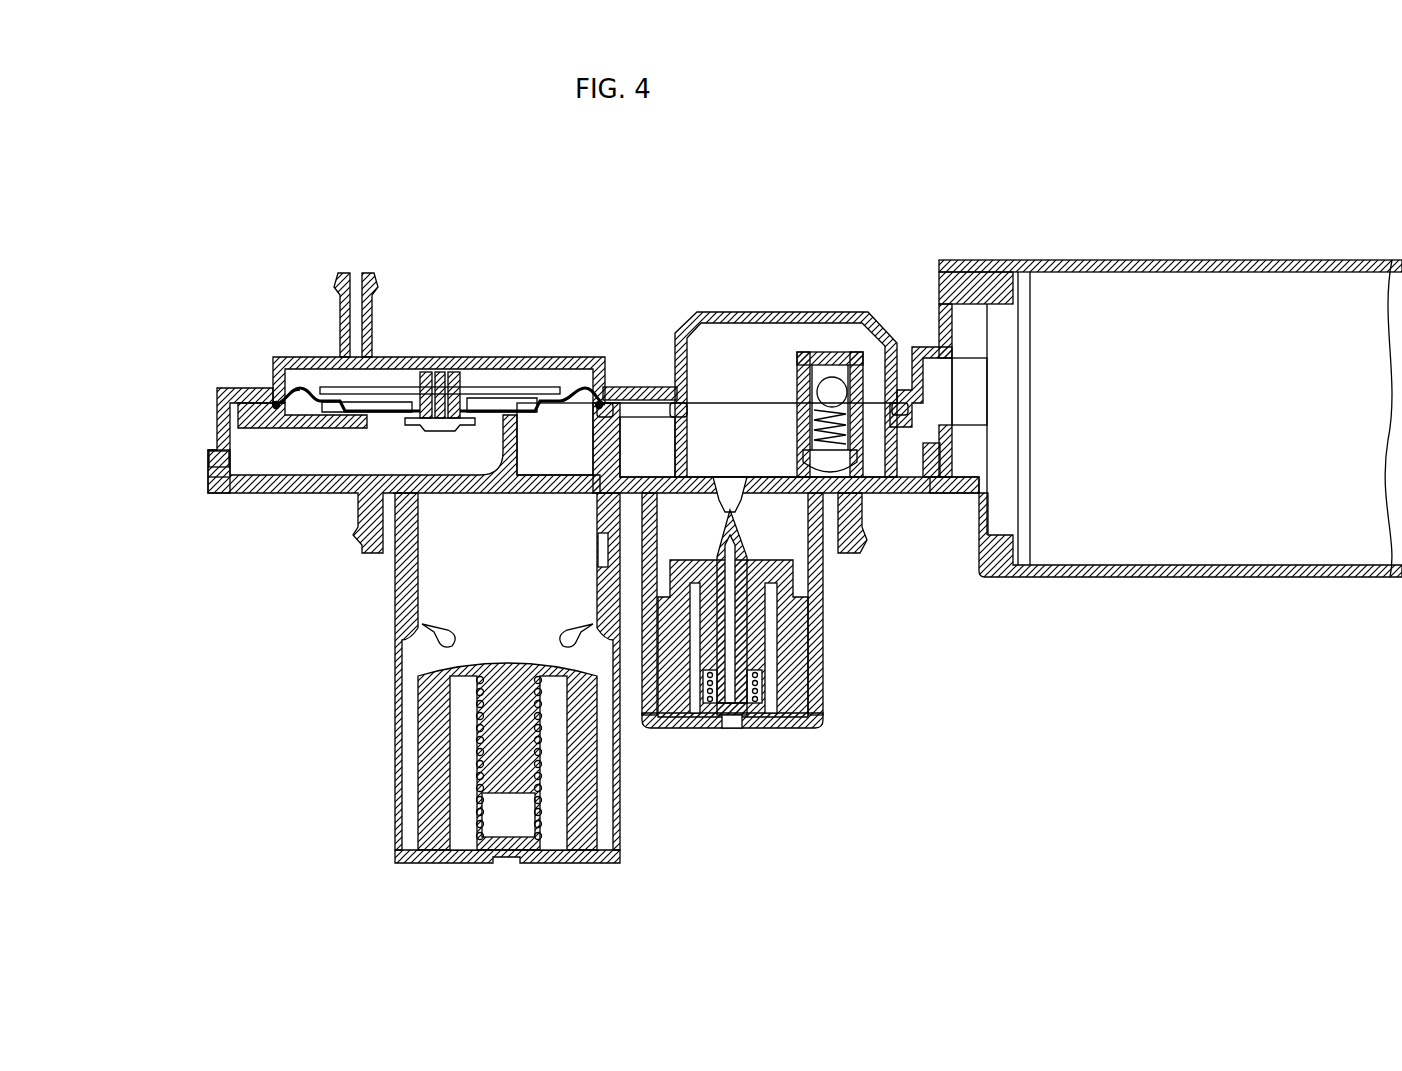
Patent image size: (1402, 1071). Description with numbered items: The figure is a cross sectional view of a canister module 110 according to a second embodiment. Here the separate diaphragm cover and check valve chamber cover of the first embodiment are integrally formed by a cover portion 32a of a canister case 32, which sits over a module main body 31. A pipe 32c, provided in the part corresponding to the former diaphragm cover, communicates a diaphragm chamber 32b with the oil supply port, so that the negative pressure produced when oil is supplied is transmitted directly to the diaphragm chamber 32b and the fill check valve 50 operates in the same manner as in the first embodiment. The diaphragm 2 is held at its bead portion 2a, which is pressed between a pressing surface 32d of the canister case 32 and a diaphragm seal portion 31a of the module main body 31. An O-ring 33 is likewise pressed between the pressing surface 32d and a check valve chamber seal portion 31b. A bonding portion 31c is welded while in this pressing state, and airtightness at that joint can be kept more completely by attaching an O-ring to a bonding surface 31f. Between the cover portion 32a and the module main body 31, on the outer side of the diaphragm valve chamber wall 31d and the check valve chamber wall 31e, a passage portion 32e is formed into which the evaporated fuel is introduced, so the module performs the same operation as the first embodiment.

The diaphragm 2 is at (355, 407).
The bead portion 2a is at (268, 405).
The module main body 31 is at (286, 494).
The diaphragm seal portion 31a is at (283, 408).
The check valve chamber seal portion 31b is at (688, 410).
The bonding portion 31c is at (225, 494).
The diaphragm valve chamber wall 31d is at (623, 387).
The check valve chamber wall 31e is at (605, 480).
The bonding surface 31f is at (212, 478).
The canister case 32 is at (1000, 262).
The cover portion 32a is at (650, 387).
The diaphragm chamber 32b is at (508, 377).
The pipe 32c is at (373, 302).
The pressing surface 32d is at (278, 402).
The passage portion 32e is at (250, 462).
The O-ring 33 is at (678, 403).
The fill check valve 50 is at (377, 597).
The canister module 110 is at (1017, 242).